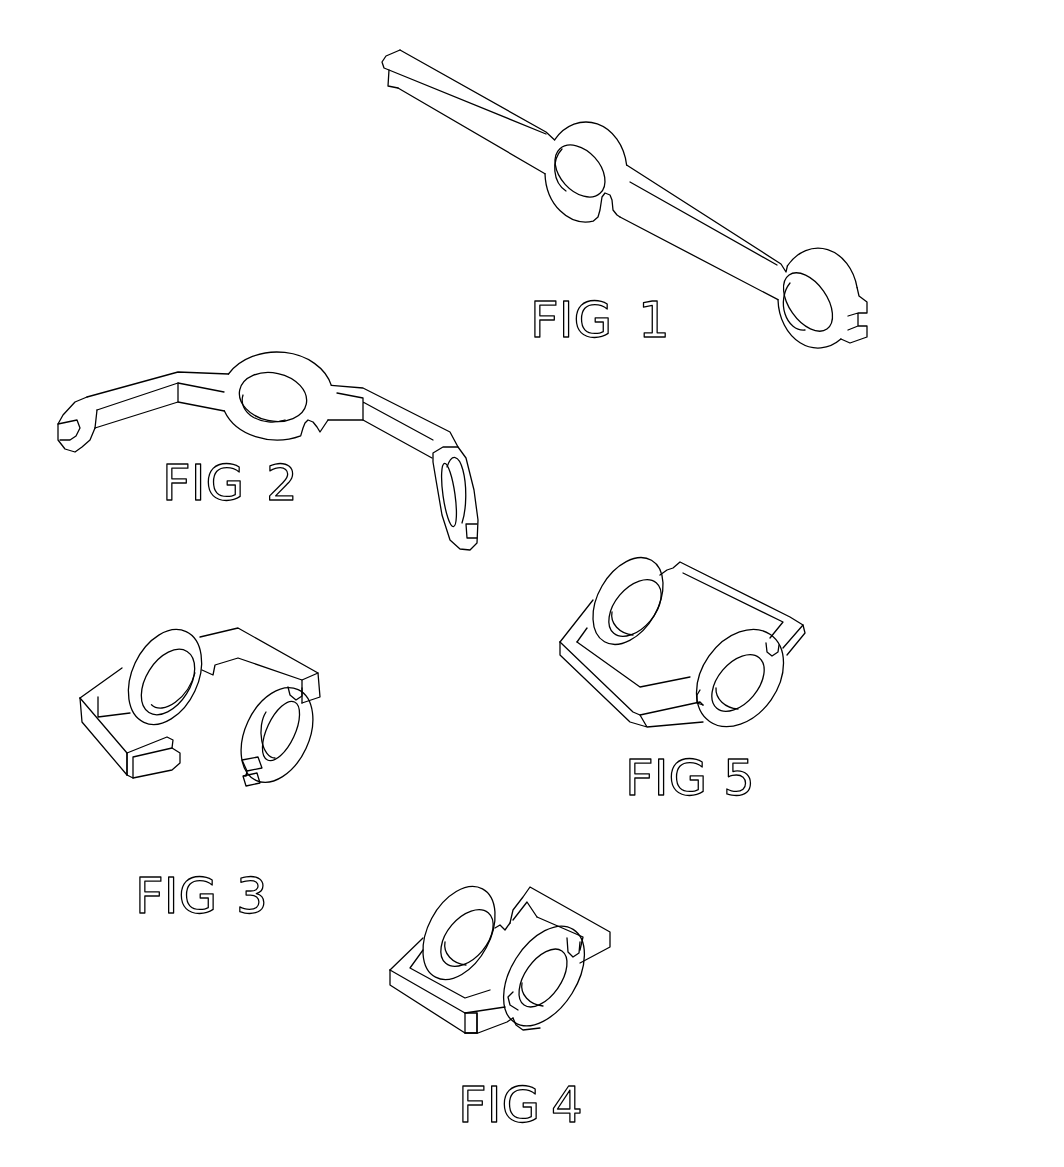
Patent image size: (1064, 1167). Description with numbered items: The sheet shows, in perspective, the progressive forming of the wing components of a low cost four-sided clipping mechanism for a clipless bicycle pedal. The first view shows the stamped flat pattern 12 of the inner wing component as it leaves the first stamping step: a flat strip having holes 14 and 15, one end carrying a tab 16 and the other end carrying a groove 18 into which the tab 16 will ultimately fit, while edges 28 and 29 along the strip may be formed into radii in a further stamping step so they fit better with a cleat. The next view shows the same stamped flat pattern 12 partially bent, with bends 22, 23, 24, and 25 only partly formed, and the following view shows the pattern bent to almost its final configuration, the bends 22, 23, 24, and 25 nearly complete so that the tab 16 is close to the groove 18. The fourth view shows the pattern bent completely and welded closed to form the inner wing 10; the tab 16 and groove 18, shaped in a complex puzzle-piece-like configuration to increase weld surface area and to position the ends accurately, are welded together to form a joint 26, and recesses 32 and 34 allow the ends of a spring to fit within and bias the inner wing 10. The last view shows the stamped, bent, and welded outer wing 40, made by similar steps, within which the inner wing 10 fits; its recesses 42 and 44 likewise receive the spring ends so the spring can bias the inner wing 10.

In FIG. 4, the inner wing 10 is at (490, 860).
In FIG. 1, the stamped flat pattern 12 is at (560, 80).
In FIG. 1, the hole 14 is at (815, 280).
In FIG. 1, the hole 15 is at (587, 155).
In FIG. 1, the tab 16 is at (378, 68).
In FIG. 3, the tab 16 is at (177, 760).
In FIG. 4, the tab 16 is at (470, 1027).
In FIG. 1, the groove 18 is at (858, 332).
In FIG. 3, the groove 18 is at (250, 778).
In FIG. 4, the groove 18 is at (530, 1010).
In FIG. 2, the bend 22 is at (97, 412).
In FIG. 3, the bend 22 is at (120, 748).
In FIG. 2, the bend 23 is at (180, 392).
In FIG. 3, the bend 23 is at (98, 695).
In FIG. 2, the bend 24 is at (365, 397).
In FIG. 3, the bend 24 is at (240, 660).
In FIG. 2, the bend 25 is at (433, 453).
In FIG. 3, the bend 25 is at (297, 683).
In FIG. 4, the joint 26 is at (533, 1027).
In FIG. 1, the edge 28 is at (713, 255).
In FIG. 1, the edge 29 is at (490, 105).
In FIG. 4, the recess 32 is at (507, 930).
In FIG. 4, the recess 34 is at (572, 950).
In FIG. 5, the outer wing 40 is at (690, 543).
In FIG. 5, the recess 42 is at (663, 607).
In FIG. 5, the recess 44 is at (773, 660).